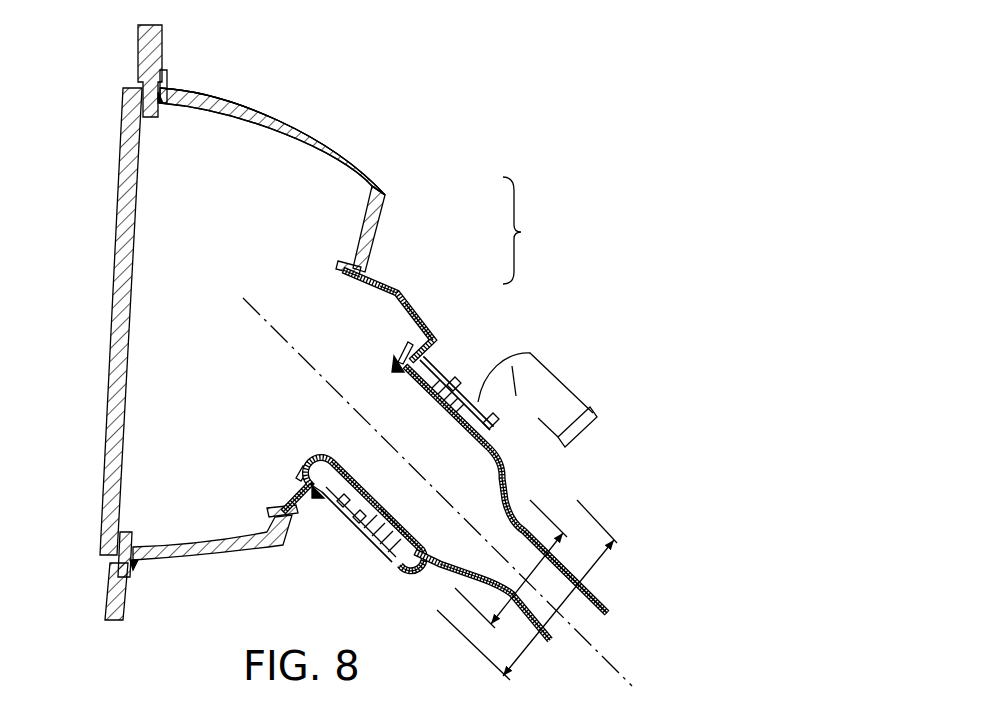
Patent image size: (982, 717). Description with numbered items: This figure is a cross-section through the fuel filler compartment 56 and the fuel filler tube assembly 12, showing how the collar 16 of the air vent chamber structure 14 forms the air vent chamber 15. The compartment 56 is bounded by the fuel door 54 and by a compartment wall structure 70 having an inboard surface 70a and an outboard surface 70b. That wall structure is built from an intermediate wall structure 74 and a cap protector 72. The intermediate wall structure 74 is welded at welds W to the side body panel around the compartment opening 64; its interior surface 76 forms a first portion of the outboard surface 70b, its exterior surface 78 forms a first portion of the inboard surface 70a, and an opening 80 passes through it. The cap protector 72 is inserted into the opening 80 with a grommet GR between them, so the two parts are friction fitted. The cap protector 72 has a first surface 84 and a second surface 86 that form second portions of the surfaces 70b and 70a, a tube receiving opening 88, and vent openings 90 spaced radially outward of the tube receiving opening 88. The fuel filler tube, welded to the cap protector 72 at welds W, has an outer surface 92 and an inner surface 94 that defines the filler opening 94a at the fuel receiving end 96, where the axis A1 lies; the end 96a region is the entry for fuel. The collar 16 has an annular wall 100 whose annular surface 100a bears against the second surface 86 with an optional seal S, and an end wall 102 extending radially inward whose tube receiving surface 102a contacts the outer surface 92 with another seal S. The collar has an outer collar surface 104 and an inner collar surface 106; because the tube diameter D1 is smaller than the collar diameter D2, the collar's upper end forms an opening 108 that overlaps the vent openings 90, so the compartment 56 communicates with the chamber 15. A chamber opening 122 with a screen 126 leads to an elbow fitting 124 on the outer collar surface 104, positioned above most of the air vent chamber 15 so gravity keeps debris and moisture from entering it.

The fuel filler tube assembly 12 is at (491, 133).
The air vent chamber structure 14 is at (454, 369).
The air vent chamber 15 is at (442, 390).
The collar 16 is at (399, 579).
The fuel door 54 is at (121, 200).
The fuel filler compartment 56 is at (320, 189).
The compartment opening 64 is at (149, 118).
The compartment wall structure 70 is at (526, 230).
The inboard surface 70a is at (379, 224).
The outboard surface 70b is at (227, 118).
The cap protector 72 is at (413, 290).
The intermediate wall structure 74 is at (378, 167).
The interior surface 76 is at (270, 131).
The exterior surface 78 is at (238, 104).
The opening 80 is at (345, 276).
The first surface 84 is at (397, 299).
The second surface 86 is at (419, 316).
The tube receiving opening 88 is at (408, 388).
The vent openings 90 is at (411, 347).
The outer surface 92 is at (367, 529).
The inner surface 94 is at (391, 522).
The filler opening 94a is at (398, 370).
The fuel receiving end 96 is at (322, 459).
The lower wall portion 96a is at (303, 476).
The annular wall 100 is at (331, 520).
The annular surface 100a is at (318, 490).
The end wall 102 is at (419, 554).
The tube receiving surface 102a is at (433, 552).
The outer collar surface 104 is at (505, 441).
The inner collar surface 106 is at (490, 448).
The opening 108 is at (346, 480).
The chamber opening 122 is at (448, 428).
The elbow fitting 124 is at (561, 406).
The screen 126 is at (515, 382).
The welds W is at (162, 99).
The seal S is at (432, 366).
The grommet GR is at (236, 518).
The diameter D1 is at (511, 564).
The diameter D2 is at (607, 618).
The axis A1(B) A1 is at (259, 320).